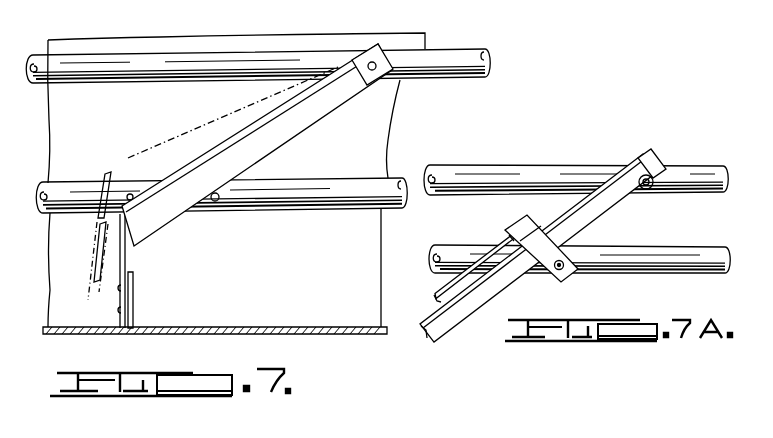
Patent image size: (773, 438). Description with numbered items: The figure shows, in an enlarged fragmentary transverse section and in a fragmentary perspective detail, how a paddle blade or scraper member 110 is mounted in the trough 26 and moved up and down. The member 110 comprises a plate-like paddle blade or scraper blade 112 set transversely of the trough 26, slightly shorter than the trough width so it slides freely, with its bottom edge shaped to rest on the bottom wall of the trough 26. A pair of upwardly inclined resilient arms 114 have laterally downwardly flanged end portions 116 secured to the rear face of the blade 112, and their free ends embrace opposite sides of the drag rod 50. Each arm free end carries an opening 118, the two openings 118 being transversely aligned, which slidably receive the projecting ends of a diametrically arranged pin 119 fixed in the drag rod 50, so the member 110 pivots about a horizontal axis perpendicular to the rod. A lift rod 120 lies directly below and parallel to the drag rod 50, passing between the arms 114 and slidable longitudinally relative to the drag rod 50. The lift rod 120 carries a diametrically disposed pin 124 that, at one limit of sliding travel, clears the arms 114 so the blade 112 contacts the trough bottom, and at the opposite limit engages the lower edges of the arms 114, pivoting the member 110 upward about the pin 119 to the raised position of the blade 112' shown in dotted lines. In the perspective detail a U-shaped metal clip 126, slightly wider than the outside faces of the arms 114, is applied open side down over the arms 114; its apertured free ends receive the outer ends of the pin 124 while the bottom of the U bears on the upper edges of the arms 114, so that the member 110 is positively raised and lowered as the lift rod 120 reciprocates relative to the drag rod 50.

In FIG. 7, the trough 26 is at (241, 334).
In FIG. 7, the drag rod 50 is at (470, 52).
In FIG. 7A, the drag rod 50 is at (490, 170).
In FIG. 7, the paddle blade or scraper member 110 is at (258, 122).
In FIG. 7A, the paddle blade or scraper member 110 is at (605, 223).
In FIG. 7, the paddle blade or scraper blade 112 is at (150, 300).
In FIG. 7, the paddle blade or scraper blade (raised position) 112' is at (83, 270).
In FIG. 7, the resilient arm 114 is at (167, 142).
In FIG. 7A, the resilient arm 114 is at (436, 301).
In FIG. 7, the laterally downwardly flanged end portion 116 is at (126, 262).
In FIG. 7, the opening 118 is at (394, 54).
In FIG. 7A, the opening 118 is at (648, 188).
In FIG. 7, the pin 119 is at (372, 62).
In FIG. 7A, the pin 119 is at (649, 175).
In FIG. 7, the lift rod 120 is at (320, 211).
In FIG. 7A, the lift rod 120 is at (680, 273).
In FIG. 7, the pin 124 is at (127, 176).
In FIG. 7A, the pin 124 is at (562, 269).
In FIG. 7A, the U-shaped metal clip 126 is at (514, 222).